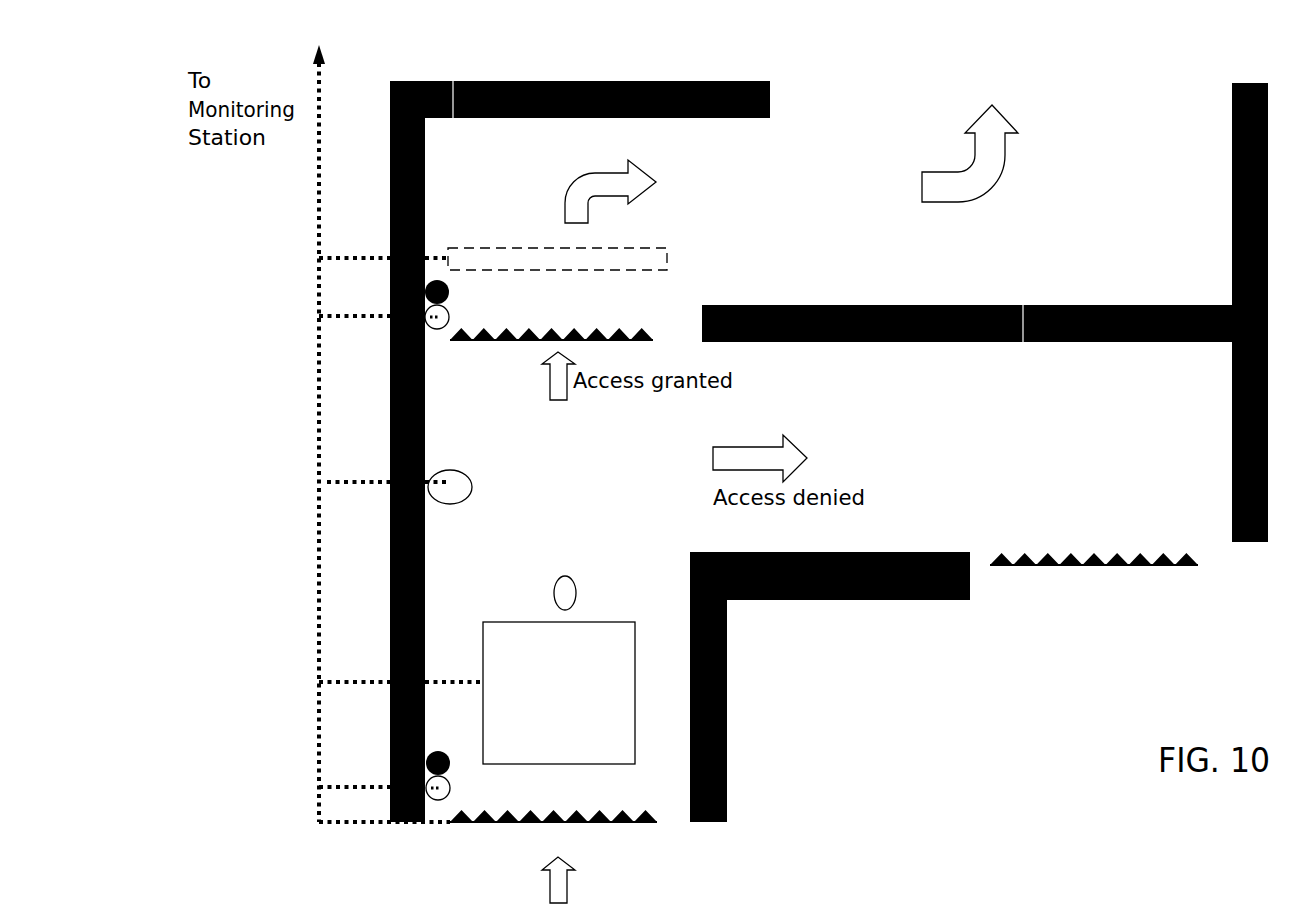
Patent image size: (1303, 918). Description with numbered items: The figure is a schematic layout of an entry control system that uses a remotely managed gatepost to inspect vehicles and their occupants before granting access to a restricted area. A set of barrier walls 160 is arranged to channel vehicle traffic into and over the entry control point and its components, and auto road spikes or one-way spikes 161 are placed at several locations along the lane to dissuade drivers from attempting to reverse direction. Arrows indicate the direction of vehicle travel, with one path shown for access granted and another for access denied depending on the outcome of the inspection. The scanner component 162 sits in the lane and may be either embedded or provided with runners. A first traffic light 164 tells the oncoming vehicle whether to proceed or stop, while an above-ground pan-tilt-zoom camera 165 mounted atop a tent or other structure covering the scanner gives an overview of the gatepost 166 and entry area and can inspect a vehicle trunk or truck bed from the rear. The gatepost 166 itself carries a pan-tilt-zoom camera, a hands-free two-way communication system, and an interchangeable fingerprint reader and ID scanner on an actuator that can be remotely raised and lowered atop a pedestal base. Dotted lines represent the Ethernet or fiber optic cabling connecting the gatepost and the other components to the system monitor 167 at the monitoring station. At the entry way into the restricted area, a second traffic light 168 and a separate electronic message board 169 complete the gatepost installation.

The barrier walls 160 is at (798, 627).
The auto road spikes 161 is at (505, 342).
The scanner component 162 is at (582, 709).
The first traffic light 164 is at (442, 790).
The pan-tilt-zoom camera 165 is at (567, 575).
The gatepost 166 is at (473, 482).
The system monitor 167 is at (327, 458).
The second traffic light 168 is at (392, 342).
The electronic message board 169 is at (472, 260).